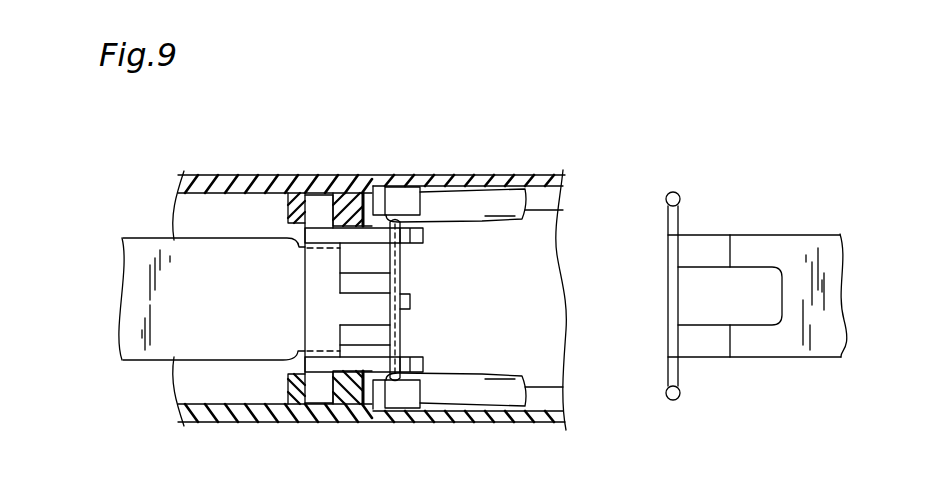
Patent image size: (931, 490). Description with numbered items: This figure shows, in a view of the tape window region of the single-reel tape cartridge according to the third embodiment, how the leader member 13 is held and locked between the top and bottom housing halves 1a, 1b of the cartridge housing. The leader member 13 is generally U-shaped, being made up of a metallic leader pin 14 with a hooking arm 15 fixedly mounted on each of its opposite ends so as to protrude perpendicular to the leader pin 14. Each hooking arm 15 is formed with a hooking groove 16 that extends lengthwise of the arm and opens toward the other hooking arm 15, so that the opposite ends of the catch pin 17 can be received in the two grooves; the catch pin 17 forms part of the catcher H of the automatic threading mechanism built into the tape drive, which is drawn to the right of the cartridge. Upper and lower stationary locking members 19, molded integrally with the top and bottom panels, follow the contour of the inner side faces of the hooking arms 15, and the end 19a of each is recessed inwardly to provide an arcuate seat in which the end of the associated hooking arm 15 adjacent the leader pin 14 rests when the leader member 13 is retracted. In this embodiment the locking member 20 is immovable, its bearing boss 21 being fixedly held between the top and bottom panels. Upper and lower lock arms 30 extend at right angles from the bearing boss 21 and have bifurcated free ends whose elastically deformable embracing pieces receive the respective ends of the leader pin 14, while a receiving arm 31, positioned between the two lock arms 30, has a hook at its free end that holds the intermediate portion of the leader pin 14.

The top housing half 1a is at (196, 174).
The bottom housing half 1b is at (200, 423).
The leader member 13 is at (532, 230).
The leader pin 14 is at (395, 289).
The hooking arm 15 is at (513, 200).
The hooking groove 16 is at (428, 190).
The catch pin 17 is at (666, 226).
The stationary locking member 19 is at (544, 197).
The end of stationary locking member 19a is at (400, 188).
The locking member 20 is at (293, 267).
The bearing boss 21 is at (318, 307).
The lock arm 30 is at (424, 236).
The receiving arm 31 is at (412, 302).
The catcher H is at (762, 369).